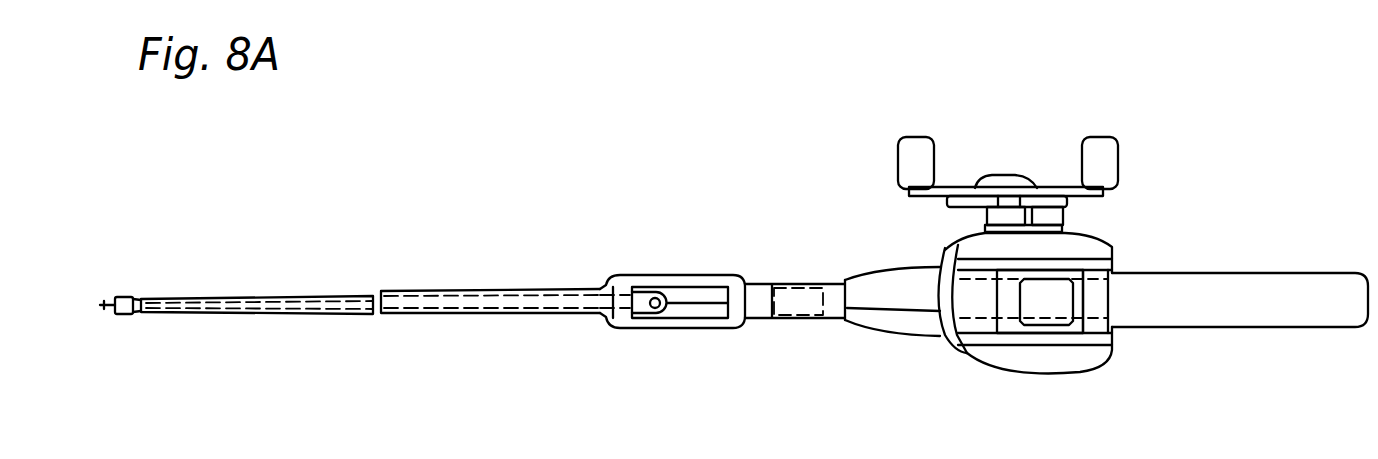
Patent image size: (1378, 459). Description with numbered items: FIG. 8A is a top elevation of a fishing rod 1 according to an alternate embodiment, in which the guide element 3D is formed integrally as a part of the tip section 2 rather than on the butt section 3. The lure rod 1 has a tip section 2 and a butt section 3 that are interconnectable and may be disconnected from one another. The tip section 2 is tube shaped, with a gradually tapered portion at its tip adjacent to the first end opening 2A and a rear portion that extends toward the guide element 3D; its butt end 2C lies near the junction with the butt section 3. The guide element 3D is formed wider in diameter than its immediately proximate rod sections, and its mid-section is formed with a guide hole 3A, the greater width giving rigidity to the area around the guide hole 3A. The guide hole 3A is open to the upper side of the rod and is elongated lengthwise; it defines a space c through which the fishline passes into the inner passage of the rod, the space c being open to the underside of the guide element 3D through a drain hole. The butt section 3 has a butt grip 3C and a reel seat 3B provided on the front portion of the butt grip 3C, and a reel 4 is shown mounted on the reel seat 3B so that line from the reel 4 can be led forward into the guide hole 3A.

The fishing rod 1 is at (783, 204).
The tip section 2 is at (345, 291).
The first end opening 2A is at (111, 291).
The butt end portion of rod body 2C is at (836, 294).
The butt section 3 is at (1200, 267).
The guide hole 3A is at (722, 296).
The reel seat 3B is at (985, 325).
The butt grip 3C is at (1223, 315).
The guide element 3D is at (710, 249).
The reel 4 is at (1101, 239).
The space c is at (691, 291).